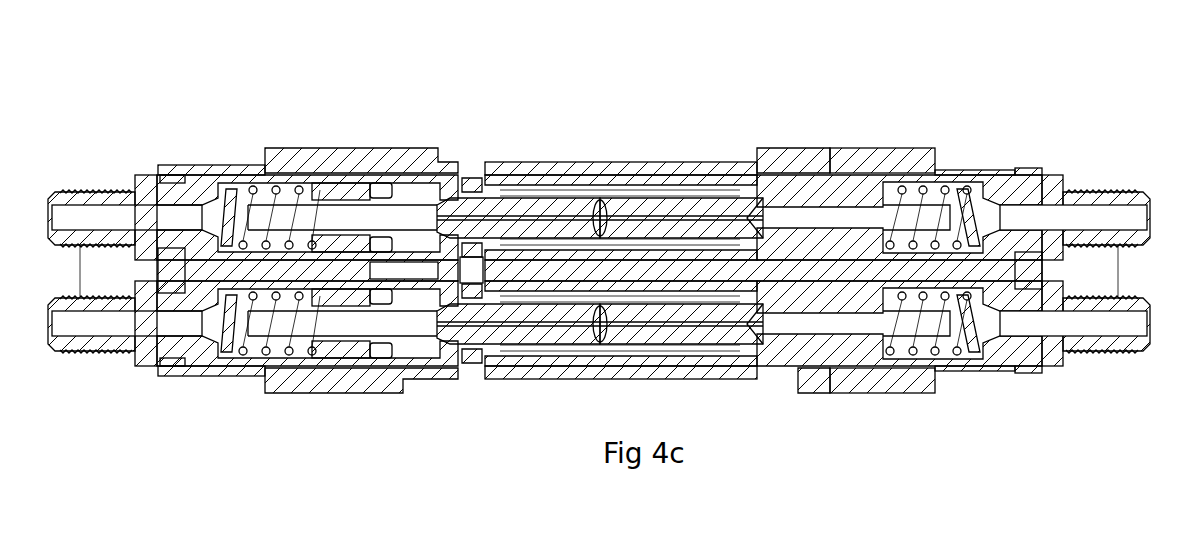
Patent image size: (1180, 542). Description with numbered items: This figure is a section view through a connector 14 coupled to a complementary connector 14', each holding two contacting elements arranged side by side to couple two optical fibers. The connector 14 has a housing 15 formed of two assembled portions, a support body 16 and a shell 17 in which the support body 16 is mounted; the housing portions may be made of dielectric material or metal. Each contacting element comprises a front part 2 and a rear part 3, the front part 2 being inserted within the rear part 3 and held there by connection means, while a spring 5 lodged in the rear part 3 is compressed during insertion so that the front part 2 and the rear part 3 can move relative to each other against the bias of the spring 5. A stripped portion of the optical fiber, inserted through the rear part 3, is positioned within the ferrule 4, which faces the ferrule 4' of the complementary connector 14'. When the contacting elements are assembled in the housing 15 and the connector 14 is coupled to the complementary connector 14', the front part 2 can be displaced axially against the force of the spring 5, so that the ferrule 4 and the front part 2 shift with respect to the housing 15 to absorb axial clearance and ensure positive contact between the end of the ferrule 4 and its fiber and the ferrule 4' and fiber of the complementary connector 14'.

The front part 2 is at (766, 150).
The rear part 3 is at (957, 165).
The ferrule 4 is at (678, 201).
The ferrule of the complementary connector 4' is at (518, 208).
The spring 5 is at (926, 178).
The connector 14 is at (746, 204).
The complementary connector 14' is at (361, 225).
The housing 15 is at (801, 141).
The support body 16 is at (983, 262).
The shell 17 is at (828, 147).